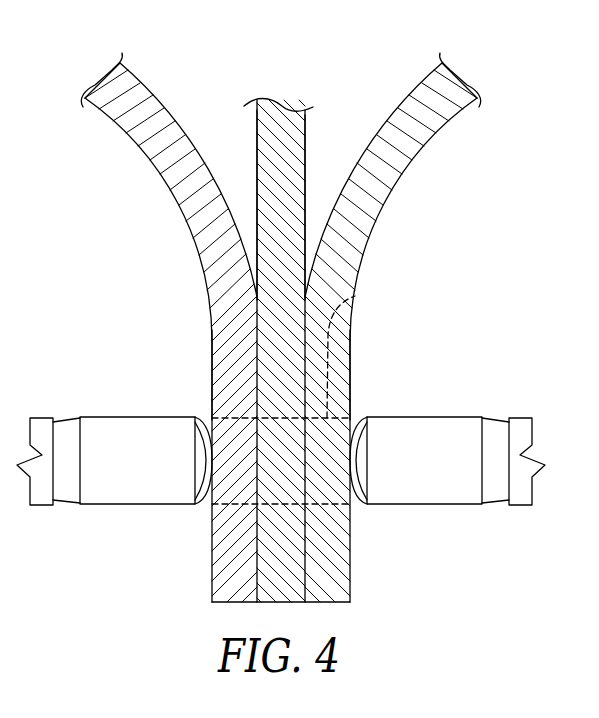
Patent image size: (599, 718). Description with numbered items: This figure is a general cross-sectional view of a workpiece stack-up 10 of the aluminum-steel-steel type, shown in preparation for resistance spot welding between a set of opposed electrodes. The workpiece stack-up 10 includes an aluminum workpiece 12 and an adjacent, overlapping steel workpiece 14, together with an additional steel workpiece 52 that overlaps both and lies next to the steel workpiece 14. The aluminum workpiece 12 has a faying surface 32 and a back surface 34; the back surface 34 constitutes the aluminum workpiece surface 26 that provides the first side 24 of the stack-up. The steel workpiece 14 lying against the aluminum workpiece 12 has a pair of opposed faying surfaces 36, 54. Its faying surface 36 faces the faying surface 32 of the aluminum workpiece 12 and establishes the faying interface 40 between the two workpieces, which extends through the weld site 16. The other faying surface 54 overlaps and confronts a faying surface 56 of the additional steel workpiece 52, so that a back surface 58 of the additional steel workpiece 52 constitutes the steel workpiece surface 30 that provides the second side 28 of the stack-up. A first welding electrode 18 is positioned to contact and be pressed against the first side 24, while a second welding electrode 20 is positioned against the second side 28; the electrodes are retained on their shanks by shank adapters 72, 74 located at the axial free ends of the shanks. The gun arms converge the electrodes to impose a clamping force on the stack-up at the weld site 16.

The workpiece stack-up 10 is at (208, 588).
The aluminum workpiece 12 is at (154, 319).
The steel workpiece 14 is at (282, 122).
The weld site 16 is at (357, 289).
The first welding electrode 18 is at (114, 473).
The second welding electrode 20 is at (447, 466).
The first side 24 is at (205, 391).
The aluminum workpiece surface 26 is at (212, 366).
The second side 28 is at (359, 393).
The steel workpiece surface 30 is at (352, 366).
The faying surface 32 is at (175, 112).
The back surface 34 is at (157, 170).
The faying surface 36 is at (257, 147).
The faying interface 40 is at (244, 492).
The additional steel workpiece 52 is at (409, 320).
The faying surface 54 is at (306, 158).
The faying surface 56 is at (388, 117).
The back surface 58 is at (412, 158).
The shank adapter 72 is at (68, 443).
The shank adapter 74 is at (490, 440).